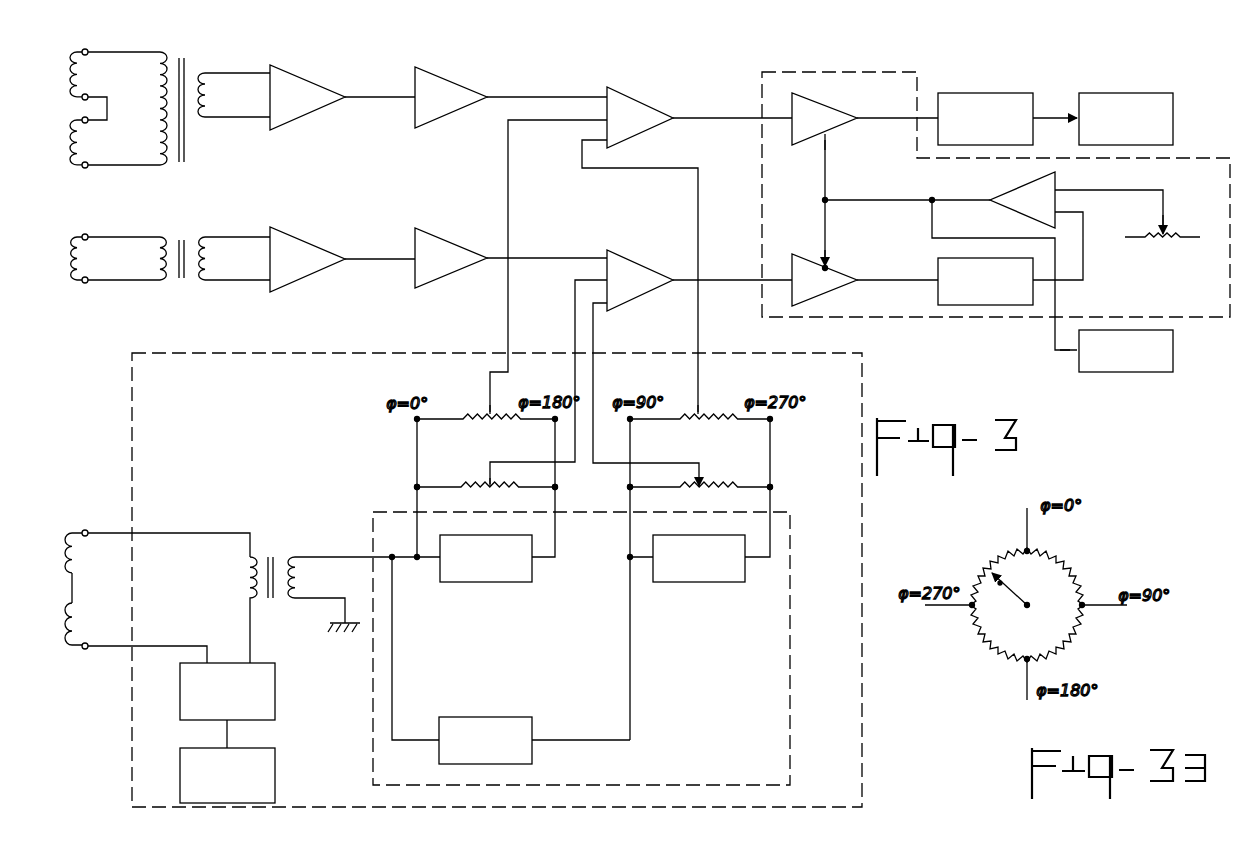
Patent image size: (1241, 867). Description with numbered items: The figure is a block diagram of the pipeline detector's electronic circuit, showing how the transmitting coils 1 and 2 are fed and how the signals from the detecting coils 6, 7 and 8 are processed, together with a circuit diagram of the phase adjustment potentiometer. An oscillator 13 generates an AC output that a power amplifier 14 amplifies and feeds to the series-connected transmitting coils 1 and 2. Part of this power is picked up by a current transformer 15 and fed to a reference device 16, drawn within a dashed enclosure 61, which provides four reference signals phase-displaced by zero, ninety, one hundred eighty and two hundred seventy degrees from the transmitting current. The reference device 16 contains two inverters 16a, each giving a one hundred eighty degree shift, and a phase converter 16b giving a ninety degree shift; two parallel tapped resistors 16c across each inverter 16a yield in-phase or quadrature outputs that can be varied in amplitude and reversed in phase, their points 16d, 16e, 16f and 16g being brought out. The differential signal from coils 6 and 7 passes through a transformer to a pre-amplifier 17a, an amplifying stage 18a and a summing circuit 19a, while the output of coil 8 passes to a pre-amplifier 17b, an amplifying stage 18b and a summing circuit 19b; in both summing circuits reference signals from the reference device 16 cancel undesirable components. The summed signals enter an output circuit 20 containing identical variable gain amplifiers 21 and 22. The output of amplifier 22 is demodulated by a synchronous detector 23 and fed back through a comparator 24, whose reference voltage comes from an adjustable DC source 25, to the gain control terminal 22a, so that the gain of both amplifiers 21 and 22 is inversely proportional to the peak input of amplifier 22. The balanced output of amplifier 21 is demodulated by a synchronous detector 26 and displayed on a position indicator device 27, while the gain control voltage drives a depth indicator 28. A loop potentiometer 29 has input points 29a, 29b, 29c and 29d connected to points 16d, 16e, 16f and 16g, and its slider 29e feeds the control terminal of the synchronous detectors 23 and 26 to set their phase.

In FIG. 3, the transmitting coil 1 is at (62, 628).
In FIG. 3, the transmitting coil 2 is at (66, 550).
In FIG. 3, the detecting coil 6 is at (65, 73).
In FIG. 3, the detecting coil 7 is at (66, 147).
In FIG. 3, the detecting coil 8 is at (66, 252).
In FIG. 3, the oscillator 13 is at (234, 791).
In FIG. 3, the power amplifier 14 is at (234, 706).
In FIG. 3, the current transformer 15 is at (273, 556).
In FIG. 3, the reference device 16 is at (790, 700).
In FIG. 3, the inverter 16a is at (486, 572).
In FIG. 3, the phase converter 16b is at (486, 754).
In FIG. 3, the tapped resistor 16c is at (470, 445).
In FIG. 3, the point of tapped resistor 16d is at (416, 488).
In FIG. 3, the point of tapped resistor 16e is at (629, 489).
In FIG. 3, the point of tapped resistor 16f is at (556, 487).
In FIG. 3, the point of tapped resistor 16g is at (771, 488).
In FIG. 3, the pre-amplifier 17a is at (298, 95).
In FIG. 3, the pre-amplifier 17b is at (298, 250).
In FIG. 3, the amplifying stage 18a is at (437, 87).
In FIG. 3, the amplifying stage 18b is at (437, 250).
In FIG. 3, the summing circuit 19a is at (625, 110).
In FIG. 3, the summing circuit 19b is at (620, 268).
In FIG. 3, the output circuit 20 is at (946, 322).
In FIG. 3, the variable gain amplifier 21 is at (813, 112).
In FIG. 3, the variable gain amplifier 22 is at (847, 275).
In FIG. 3, the gain control terminal 22a is at (827, 268).
In FIG. 3, the synchronous detector 23 is at (990, 290).
In FIG. 3, the comparator 24 is at (1020, 192).
In FIG. 3, the adjustable DC source 25 is at (1165, 240).
In FIG. 3, the synchronous detector 26 is at (1010, 72).
In FIG. 3, the position indicator device 27 is at (1138, 100).
In FIG. 3, the depth indicator 28 is at (1138, 358).
In FIG. 3A, the loop potentiometer 29 is at (1098, 652).
In FIG. 3A, the input point 29a is at (1032, 551).
In FIG. 3A, the input point 29b is at (1088, 607).
In FIG. 3A, the input point 29c is at (1025, 660).
In FIG. 3A, the input point 29d is at (970, 607).
In FIG. 3A, the slider 29e is at (1012, 585).
In FIG. 3, the excitation circuit 61 is at (130, 715).